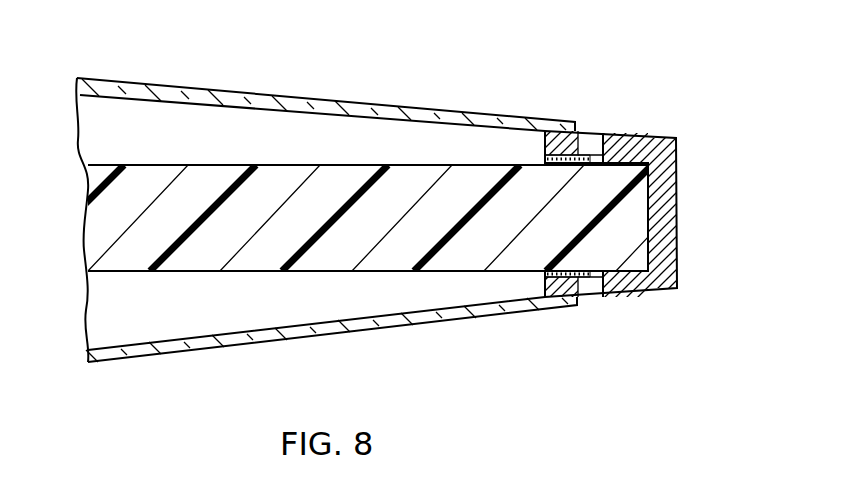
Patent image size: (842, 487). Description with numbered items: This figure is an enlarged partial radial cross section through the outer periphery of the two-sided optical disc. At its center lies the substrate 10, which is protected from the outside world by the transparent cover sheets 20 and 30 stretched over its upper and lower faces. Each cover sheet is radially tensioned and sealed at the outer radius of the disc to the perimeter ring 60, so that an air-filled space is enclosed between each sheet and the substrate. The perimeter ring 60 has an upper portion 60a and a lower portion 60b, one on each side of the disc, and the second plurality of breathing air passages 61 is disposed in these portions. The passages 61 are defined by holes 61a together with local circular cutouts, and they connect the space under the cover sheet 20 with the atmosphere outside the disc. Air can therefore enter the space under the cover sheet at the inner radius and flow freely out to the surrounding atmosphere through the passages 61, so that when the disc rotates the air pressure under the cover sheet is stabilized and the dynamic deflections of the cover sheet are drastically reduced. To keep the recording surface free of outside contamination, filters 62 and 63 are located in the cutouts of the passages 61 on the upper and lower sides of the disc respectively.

The substrate 10 is at (90, 243).
The cover sheet 20 is at (157, 87).
The cover sheet 30 is at (185, 352).
The perimeter ring 60 is at (677, 212).
The upper portion of the perimeter ring 60a is at (572, 128).
The lower portion of the perimeter ring 60b is at (563, 300).
The breathing air passages 61 is at (605, 135).
The holes 61a is at (589, 126).
The filter 62 is at (545, 158).
The filter 63 is at (545, 273).